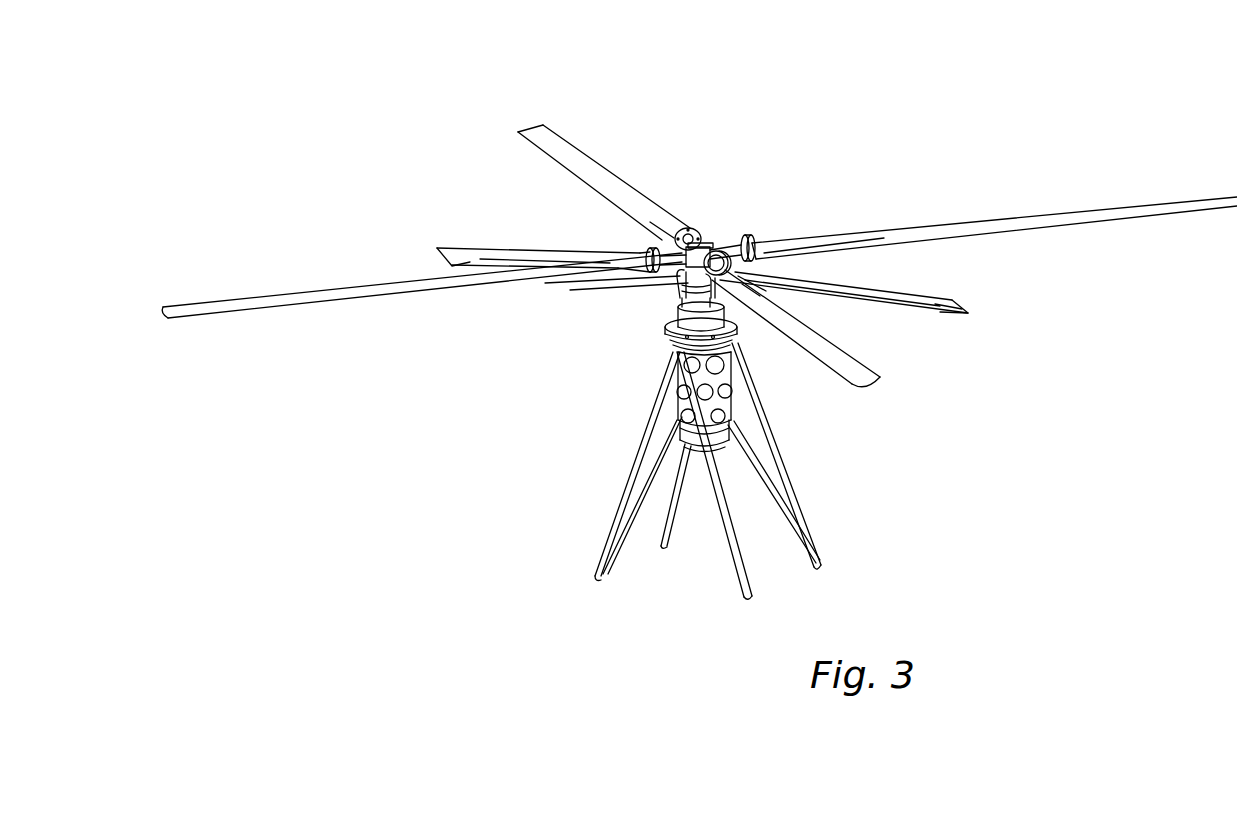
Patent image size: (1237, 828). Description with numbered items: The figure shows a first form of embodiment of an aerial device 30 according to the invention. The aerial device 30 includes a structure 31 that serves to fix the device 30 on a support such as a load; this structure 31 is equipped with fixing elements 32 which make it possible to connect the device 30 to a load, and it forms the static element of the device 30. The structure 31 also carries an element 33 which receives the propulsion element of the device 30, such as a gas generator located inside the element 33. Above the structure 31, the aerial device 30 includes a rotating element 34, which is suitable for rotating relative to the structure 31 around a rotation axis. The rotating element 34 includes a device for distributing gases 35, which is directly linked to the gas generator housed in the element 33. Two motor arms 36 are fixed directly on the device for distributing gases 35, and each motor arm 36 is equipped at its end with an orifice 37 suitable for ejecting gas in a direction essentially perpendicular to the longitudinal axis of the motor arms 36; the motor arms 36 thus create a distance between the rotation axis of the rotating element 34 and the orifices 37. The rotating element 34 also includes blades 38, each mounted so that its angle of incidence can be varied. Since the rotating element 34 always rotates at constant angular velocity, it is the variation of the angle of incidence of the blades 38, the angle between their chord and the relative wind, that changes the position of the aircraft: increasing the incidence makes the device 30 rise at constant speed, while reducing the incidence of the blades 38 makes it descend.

The aerial device 30 is at (372, 126).
The structure 31 is at (597, 484).
The fixing elements 32 is at (738, 564).
The element 33 is at (714, 380).
The rotating element 34 is at (776, 215).
The device for distributing gases 35 is at (690, 290).
The motor arms 36 is at (498, 255).
The orifice 37 is at (440, 252).
The blades 38 is at (290, 298).